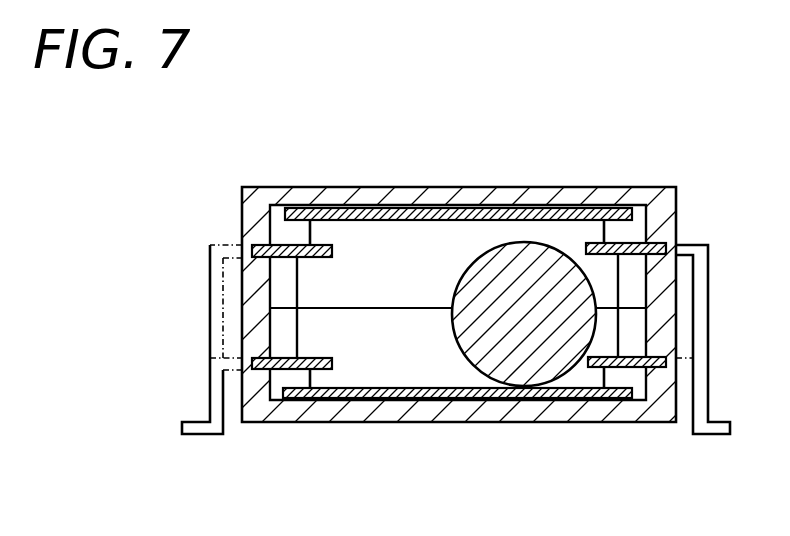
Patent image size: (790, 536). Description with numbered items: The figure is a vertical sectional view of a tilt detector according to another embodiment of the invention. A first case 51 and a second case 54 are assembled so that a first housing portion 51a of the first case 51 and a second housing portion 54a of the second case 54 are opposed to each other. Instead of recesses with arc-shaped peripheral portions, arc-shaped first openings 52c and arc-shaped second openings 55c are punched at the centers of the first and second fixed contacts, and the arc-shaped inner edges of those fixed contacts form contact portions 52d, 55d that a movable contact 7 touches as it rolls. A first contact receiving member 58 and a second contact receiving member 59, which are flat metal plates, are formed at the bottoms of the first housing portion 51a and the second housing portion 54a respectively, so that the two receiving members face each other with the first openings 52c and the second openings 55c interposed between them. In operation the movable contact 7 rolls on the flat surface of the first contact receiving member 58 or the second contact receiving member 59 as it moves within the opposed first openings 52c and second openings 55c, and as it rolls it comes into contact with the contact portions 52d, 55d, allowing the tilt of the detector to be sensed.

The movable contact 7 is at (524, 262).
The first case 51 is at (677, 187).
The first housing portion 51a is at (312, 283).
The first openings 52c is at (427, 253).
The contact portions 52d is at (333, 253).
The second case 54 is at (241, 426).
The second housing portion 54a is at (320, 328).
The second openings 55c is at (405, 362).
The contact portions 55d is at (335, 364).
The first contact receiving member 58 is at (297, 243).
The second contact receiving member 59 is at (307, 392).